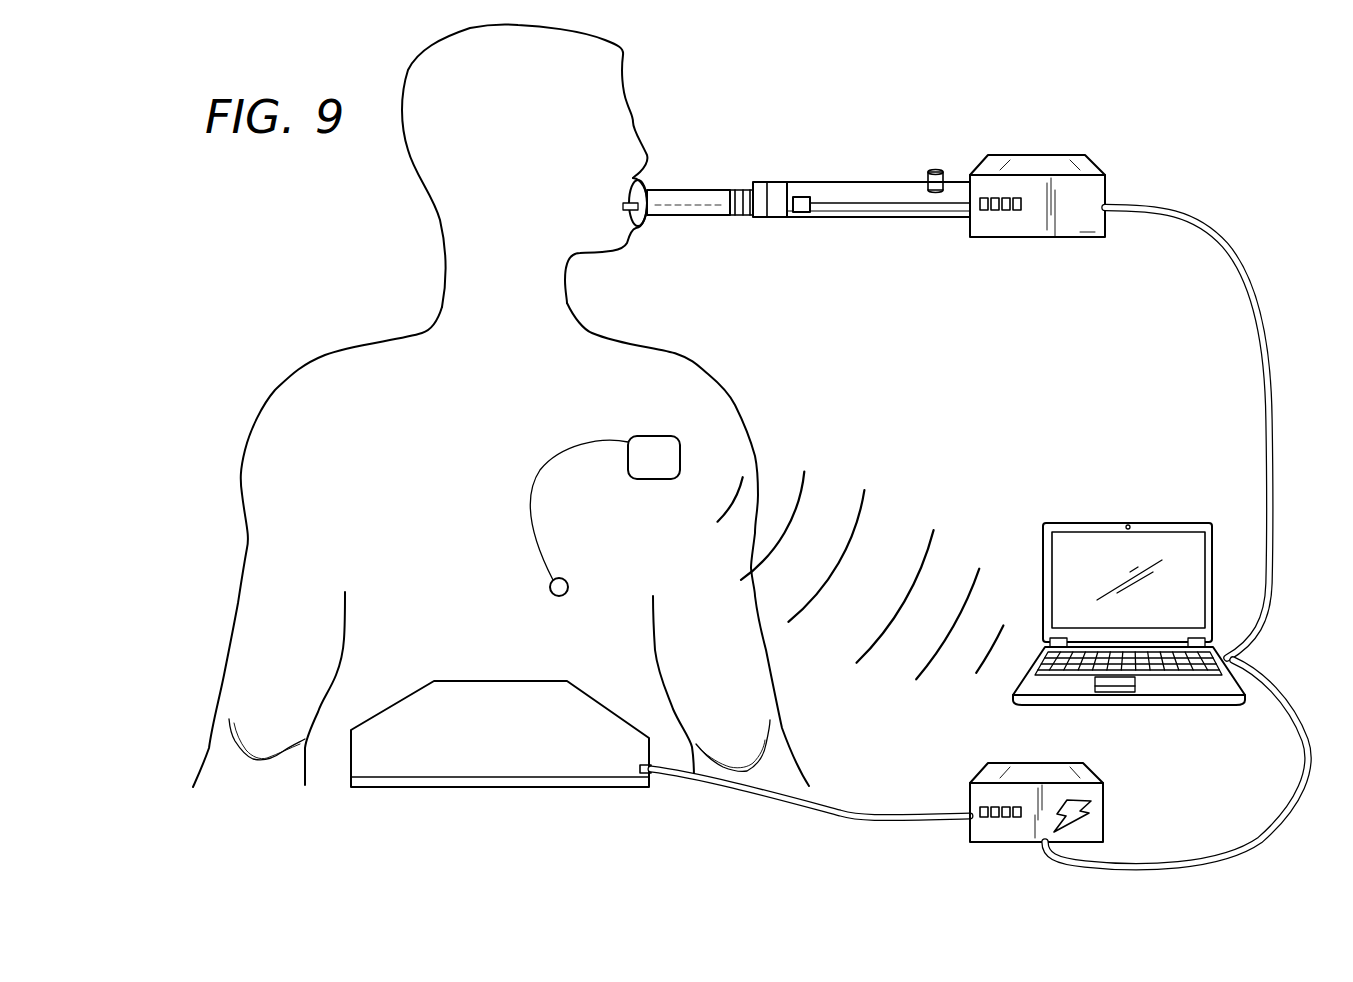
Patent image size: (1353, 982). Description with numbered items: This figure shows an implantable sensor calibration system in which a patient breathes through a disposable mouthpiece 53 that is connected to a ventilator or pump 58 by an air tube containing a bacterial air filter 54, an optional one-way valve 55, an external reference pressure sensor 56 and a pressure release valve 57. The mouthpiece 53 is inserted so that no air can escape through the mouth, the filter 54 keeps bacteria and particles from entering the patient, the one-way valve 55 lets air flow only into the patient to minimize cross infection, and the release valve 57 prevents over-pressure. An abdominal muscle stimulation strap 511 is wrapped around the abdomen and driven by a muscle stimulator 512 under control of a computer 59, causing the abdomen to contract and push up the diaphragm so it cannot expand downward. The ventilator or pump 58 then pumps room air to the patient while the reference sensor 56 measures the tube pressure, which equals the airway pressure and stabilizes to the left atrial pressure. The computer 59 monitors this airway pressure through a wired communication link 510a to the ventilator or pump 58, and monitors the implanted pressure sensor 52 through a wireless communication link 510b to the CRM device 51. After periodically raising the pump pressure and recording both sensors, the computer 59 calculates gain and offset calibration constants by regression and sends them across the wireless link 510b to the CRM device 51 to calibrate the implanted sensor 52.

The CRM device 51 is at (680, 441).
The implanted pressure sensor 52 is at (550, 585).
The disposable mouthpiece 53 is at (643, 187).
The bacterial air filter 54 is at (733, 183).
The one-way valve 55 is at (775, 182).
The external reference pressure sensor 56 is at (810, 190).
The pressure release valve 57 is at (933, 193).
The ventilator or pump 58 is at (1065, 237).
The computer 59 is at (1173, 523).
The wired communication link 510a is at (1243, 277).
The wireless communication link 510b is at (768, 557).
The abdominal muscle stimulation strap 511 is at (427, 773).
The muscle stimulator 512 is at (1105, 805).